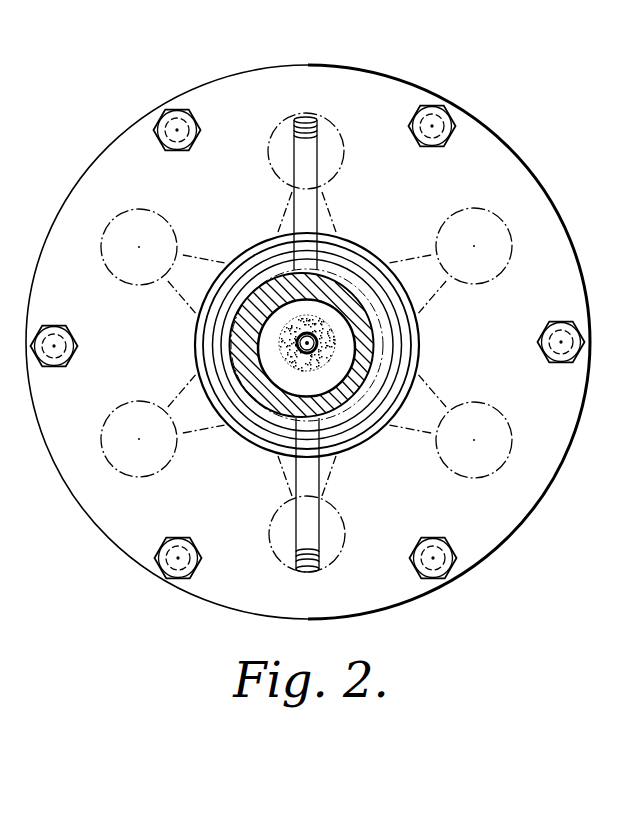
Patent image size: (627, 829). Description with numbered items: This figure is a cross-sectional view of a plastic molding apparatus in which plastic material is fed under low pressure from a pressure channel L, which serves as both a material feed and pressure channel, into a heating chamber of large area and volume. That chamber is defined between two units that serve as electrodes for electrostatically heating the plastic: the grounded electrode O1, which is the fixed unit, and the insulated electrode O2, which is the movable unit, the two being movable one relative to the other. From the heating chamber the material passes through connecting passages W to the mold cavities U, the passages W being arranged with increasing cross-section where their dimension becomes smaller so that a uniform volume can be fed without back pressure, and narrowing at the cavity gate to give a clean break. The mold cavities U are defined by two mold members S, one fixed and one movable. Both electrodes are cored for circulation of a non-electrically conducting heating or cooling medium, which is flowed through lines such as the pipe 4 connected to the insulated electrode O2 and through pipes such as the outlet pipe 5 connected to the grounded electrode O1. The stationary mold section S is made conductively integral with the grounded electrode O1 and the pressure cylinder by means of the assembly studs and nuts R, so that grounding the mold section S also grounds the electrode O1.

The mold member S is at (517, 515).
The assembly studs and nuts R is at (434, 127).
The mold cavity U is at (493, 233).
The connecting passage W is at (432, 288).
The grounded electrode O1 is at (367, 428).
The insulated electrode O2 is at (352, 297).
The pressure channel L is at (333, 336).
The pipe 4 is at (286, 356).
The outlet pipe 5 is at (314, 165).